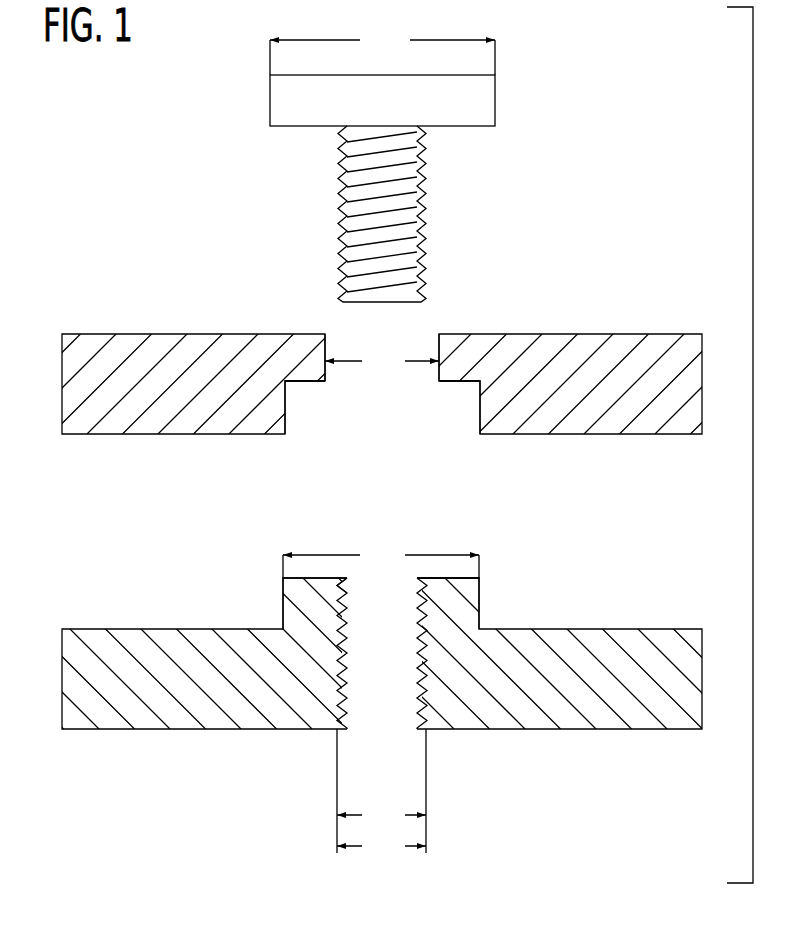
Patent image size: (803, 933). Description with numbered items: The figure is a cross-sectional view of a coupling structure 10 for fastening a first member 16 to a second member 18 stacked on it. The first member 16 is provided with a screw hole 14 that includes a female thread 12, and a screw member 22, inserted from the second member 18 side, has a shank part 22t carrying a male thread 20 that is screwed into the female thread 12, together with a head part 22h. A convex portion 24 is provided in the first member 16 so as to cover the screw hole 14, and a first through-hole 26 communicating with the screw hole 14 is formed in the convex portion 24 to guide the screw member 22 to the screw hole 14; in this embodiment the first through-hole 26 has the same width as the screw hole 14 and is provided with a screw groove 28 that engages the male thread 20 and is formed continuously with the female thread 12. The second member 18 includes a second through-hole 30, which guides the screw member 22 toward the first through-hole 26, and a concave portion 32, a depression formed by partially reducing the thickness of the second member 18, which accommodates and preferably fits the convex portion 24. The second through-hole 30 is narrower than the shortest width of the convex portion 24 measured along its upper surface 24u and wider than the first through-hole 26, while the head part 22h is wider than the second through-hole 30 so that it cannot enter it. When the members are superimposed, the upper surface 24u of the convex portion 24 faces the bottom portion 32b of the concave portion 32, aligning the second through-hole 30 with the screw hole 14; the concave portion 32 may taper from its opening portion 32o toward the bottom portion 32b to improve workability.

The coupling structure 10 is at (118, 293).
The female thread 12 is at (350, 713).
The screw hole 14 is at (391, 697).
The first member 16 is at (62, 655).
The second member 18 is at (62, 357).
The male thread 20 is at (425, 209).
The screw member 22 is at (496, 93).
The head part 22h is at (268, 102).
The shank part 22t is at (340, 220).
The convex portion 24 is at (481, 596).
The upper surface 24u is at (453, 578).
The first through-hole 26 is at (411, 578).
The screw groove 28 is at (348, 598).
The second through-hole 30 is at (426, 342).
The concave portion 32 is at (360, 395).
The bottom portion 32b is at (304, 384).
The opening portion 32o is at (394, 420).